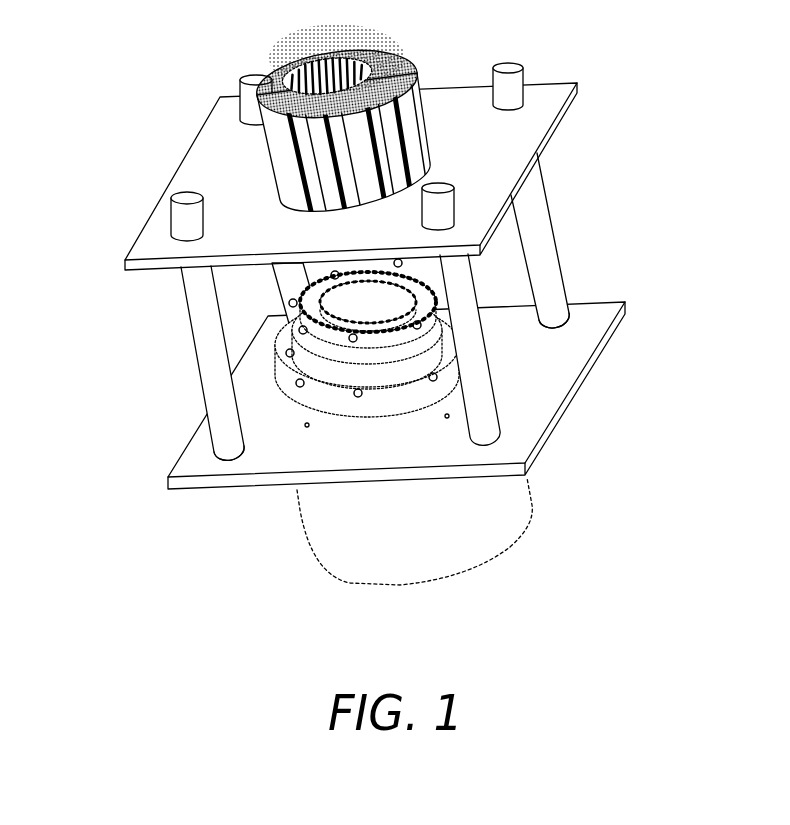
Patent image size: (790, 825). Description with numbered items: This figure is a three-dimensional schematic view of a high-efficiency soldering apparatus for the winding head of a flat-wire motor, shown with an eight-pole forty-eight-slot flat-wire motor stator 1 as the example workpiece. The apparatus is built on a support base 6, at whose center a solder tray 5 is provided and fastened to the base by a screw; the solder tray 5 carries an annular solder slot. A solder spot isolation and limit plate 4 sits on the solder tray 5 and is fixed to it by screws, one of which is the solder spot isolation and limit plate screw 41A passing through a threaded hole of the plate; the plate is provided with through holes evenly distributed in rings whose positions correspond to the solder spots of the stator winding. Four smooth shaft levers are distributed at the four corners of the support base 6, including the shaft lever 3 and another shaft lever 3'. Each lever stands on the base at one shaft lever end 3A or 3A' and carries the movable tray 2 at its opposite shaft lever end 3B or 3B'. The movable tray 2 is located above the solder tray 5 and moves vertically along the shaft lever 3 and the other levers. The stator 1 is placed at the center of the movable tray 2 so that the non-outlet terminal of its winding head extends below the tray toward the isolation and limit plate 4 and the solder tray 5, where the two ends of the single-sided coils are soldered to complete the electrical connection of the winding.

The 8-pole 48-slot flat-wire motor stator 1 is at (412, 92).
The movable tray 2 is at (225, 163).
The shaft lever 3 is at (557, 240).
The shaft lever 3' is at (156, 363).
The shaft lever end 3A is at (615, 290).
The shaft lever end 3A' is at (169, 456).
The shaft lever end 3B is at (541, 61).
The shaft lever end 3B' is at (127, 215).
The solder spot isolation and limit plate 4 is at (317, 337).
The solder spot isolation and limit plate screw 41A is at (414, 323).
The solder tray 5 is at (330, 397).
The support base 6 is at (540, 375).